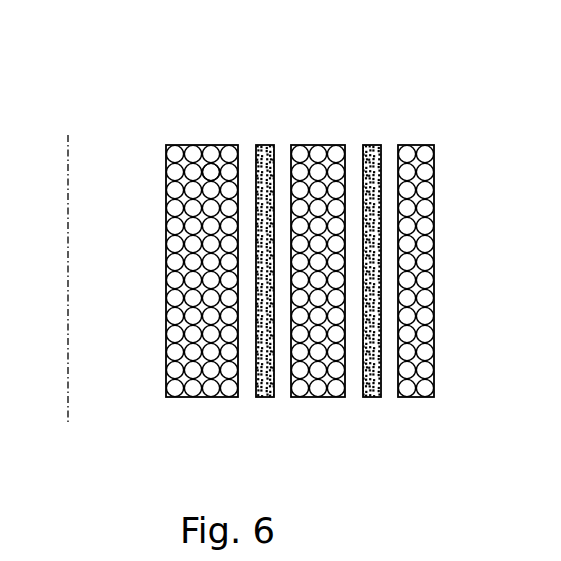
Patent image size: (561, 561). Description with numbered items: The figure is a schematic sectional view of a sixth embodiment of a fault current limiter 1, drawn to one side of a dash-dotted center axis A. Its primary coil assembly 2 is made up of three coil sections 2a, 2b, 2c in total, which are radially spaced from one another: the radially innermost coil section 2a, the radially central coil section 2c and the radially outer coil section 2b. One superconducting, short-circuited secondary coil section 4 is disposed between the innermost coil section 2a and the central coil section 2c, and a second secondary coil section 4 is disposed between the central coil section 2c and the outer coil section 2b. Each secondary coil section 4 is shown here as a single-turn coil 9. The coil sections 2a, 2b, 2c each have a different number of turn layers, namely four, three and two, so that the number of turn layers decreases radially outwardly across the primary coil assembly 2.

The fault current limiter 1 is at (462, 118).
The primary coil assembly 2 is at (202, 163).
The radially innermost coil section 2a is at (195, 412).
The radially outer coil section 2b is at (422, 410).
The radially central coil section 2c is at (321, 410).
The secondary coil section 4 is at (263, 410).
The single-turn coil 9 is at (265, 145).
The stacking axis A is at (68, 230).